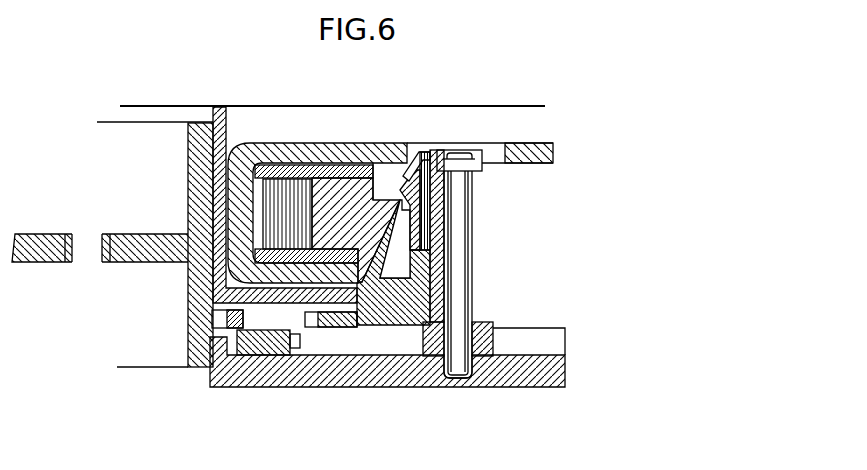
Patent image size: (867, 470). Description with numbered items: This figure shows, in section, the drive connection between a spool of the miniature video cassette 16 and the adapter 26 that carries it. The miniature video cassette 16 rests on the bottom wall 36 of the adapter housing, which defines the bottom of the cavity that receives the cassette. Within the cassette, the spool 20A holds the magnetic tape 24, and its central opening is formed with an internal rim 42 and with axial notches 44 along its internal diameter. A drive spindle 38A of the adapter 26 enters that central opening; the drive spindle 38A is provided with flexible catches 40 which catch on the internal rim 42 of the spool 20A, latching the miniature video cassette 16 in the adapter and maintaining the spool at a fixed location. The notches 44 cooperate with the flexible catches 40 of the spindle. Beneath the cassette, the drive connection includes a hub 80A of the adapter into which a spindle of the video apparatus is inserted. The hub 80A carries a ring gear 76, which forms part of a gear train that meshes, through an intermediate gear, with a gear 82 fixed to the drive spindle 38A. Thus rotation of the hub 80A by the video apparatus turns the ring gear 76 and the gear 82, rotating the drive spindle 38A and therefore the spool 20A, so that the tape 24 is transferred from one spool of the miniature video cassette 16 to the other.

The miniature video cassette 16 is at (287, 124).
The spool 20A is at (337, 190).
The magnetic tape 24 is at (277, 205).
The adapter 26 is at (221, 100).
The bottom wall 36 is at (290, 290).
The drive spindle 38A is at (434, 352).
The flexible catch 40 is at (419, 196).
The rim 42 is at (388, 202).
The axial notch 44 is at (390, 218).
The ring gear 76 is at (226, 320).
The hub 80A is at (152, 254).
The gear 82 is at (318, 315).